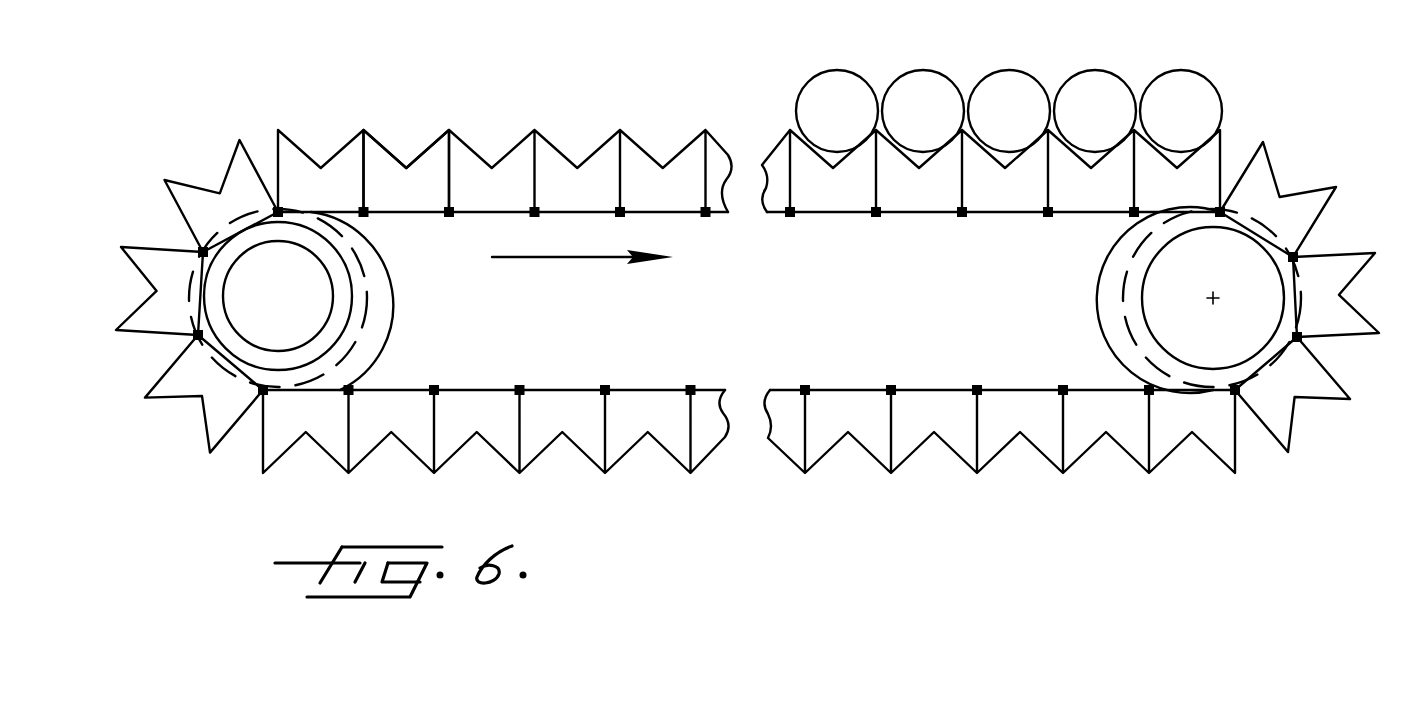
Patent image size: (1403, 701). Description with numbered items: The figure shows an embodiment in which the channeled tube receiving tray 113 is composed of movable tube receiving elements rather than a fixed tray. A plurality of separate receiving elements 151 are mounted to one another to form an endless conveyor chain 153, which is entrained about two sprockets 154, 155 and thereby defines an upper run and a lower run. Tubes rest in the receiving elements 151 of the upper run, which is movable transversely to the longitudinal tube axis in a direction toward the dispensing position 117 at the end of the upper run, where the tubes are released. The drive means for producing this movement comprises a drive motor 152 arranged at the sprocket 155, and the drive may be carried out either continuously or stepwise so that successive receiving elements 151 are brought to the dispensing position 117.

The channeled tube receiving tray 113 is at (663, 122).
The dispensing position 117 is at (1176, 138).
The receiving element 151 is at (370, 163).
The drive motor 152 is at (313, 307).
The endless conveyor chain 153 is at (923, 214).
The sprocket 154 is at (1177, 275).
The sprocket 155 is at (388, 313).